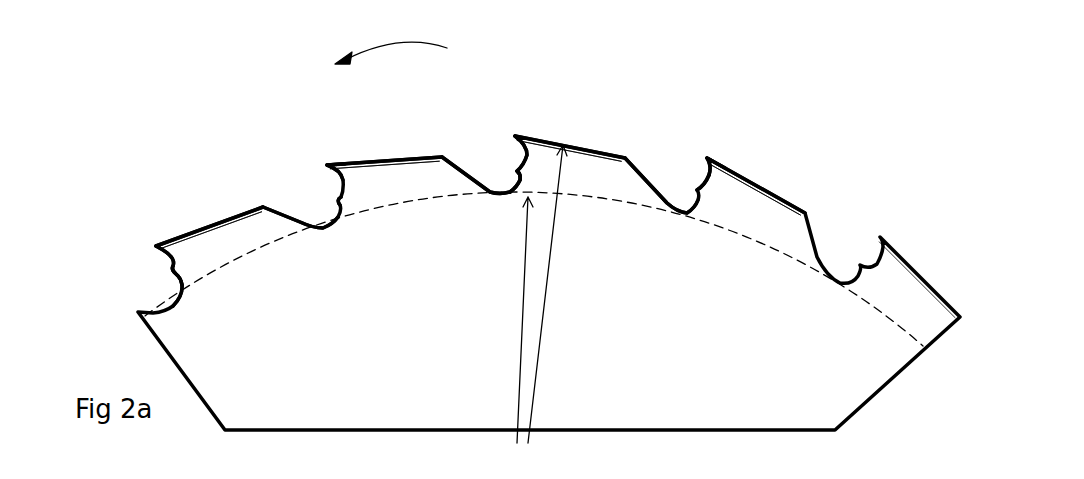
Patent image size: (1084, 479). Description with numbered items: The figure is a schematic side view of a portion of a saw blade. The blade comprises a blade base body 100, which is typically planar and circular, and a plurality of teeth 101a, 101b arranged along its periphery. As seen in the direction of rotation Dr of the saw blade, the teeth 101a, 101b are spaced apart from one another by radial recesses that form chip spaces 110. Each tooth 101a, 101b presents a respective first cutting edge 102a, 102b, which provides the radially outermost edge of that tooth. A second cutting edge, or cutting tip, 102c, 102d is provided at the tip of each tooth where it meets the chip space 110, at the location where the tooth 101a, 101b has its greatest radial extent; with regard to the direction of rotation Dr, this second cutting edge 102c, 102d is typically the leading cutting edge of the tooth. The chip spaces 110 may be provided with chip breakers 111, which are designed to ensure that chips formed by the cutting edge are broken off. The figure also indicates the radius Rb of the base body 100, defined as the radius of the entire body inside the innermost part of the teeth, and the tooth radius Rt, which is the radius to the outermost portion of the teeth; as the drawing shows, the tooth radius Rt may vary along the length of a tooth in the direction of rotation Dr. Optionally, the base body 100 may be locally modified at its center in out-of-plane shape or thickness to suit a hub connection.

The blade base body 100 is at (668, 324).
The tooth 101a is at (200, 255).
The tooth 101b is at (393, 193).
The first cutting edge 102a is at (203, 220).
The first cutting edge 102b is at (400, 153).
The second cutting edge 102c is at (153, 247).
The second cutting edge 102d is at (327, 167).
The chip space 110 is at (320, 223).
The chip breaker 111 is at (173, 275).
The radius of the base body Rb is at (508, 320).
The tooth radius Rt is at (549, 294).
The direction of rotation Dr is at (391, 41).